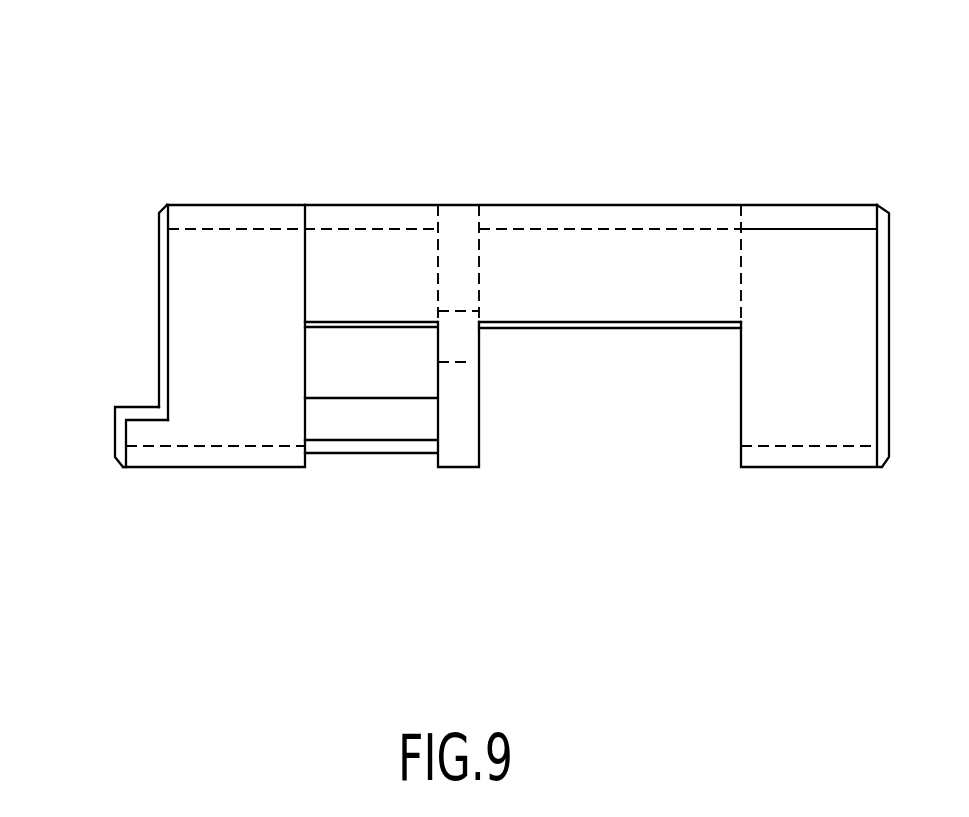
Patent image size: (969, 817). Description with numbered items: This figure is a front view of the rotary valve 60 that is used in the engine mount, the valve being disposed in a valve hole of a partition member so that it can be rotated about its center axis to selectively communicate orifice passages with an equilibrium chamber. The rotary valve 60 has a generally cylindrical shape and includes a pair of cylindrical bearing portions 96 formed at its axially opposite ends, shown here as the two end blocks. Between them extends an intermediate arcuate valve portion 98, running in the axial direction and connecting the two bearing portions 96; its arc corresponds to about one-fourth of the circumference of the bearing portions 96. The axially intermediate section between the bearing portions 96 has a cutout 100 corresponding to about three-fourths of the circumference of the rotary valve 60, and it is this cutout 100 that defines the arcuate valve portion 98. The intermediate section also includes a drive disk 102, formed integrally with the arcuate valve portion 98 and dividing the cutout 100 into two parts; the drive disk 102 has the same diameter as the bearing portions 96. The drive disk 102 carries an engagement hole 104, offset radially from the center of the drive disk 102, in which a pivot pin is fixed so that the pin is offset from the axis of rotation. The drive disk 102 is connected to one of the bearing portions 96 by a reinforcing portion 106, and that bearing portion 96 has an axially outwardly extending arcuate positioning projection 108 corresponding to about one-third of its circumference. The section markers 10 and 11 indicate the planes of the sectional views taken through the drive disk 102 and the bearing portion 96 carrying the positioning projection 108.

The rotary valve 60 is at (738, 108).
The cylindrical bearing portions 96 is at (235, 240).
The arcuate valve portion 98 is at (542, 243).
The cutout 100 is at (633, 380).
The drive disk 102 is at (480, 445).
The engagement hole 104 is at (468, 361).
The reinforcing portion 106 is at (383, 420).
The arcuate positioning projection 108 is at (137, 435).
The section line 10- 10 is at (406, 58).
The section line 11- 11 is at (83, 53).